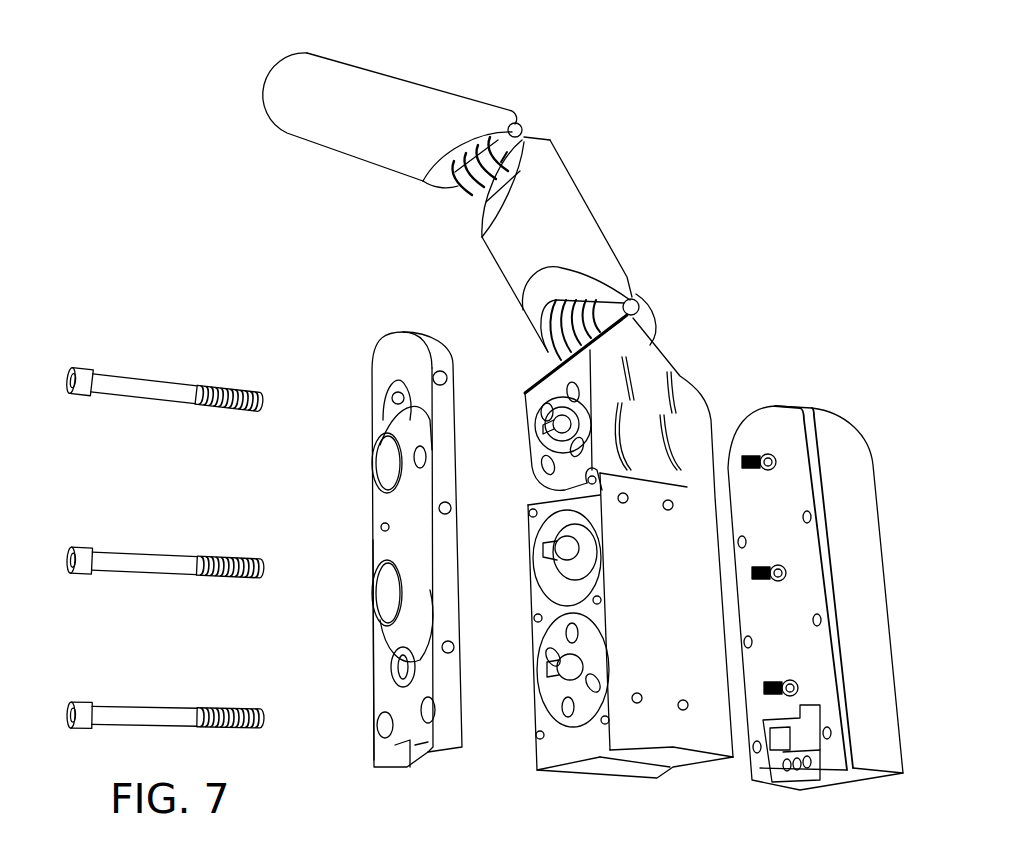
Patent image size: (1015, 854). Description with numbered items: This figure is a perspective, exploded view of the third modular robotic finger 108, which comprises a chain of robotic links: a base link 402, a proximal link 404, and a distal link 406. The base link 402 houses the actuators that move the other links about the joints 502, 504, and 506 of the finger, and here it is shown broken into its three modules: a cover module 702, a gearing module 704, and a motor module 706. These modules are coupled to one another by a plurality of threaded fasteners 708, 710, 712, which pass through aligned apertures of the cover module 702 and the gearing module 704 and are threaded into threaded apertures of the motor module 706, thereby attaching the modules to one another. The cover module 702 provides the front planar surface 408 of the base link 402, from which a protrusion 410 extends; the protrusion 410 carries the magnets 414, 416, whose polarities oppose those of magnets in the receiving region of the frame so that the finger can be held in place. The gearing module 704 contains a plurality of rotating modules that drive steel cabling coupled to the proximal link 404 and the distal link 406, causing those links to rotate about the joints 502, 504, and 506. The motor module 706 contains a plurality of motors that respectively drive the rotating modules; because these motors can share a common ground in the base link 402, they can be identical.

The third modular robotic finger 108 is at (641, 130).
The base link 402 is at (851, 595).
The proximal link 404 is at (558, 195).
The distal link 406 is at (422, 98).
The front planar surface 408 is at (367, 529).
The protrusion 410 is at (373, 540).
The magnet 414 is at (385, 472).
The magnet 416 is at (383, 593).
The joint 502 is at (717, 403).
The joint 504 is at (637, 292).
The joint 506 is at (524, 126).
The cover module 702 is at (390, 340).
The gearing module 704 is at (688, 382).
The motor module 706 is at (887, 578).
The threaded fastener 708 is at (175, 390).
The threaded fastener 710 is at (180, 562).
The threaded fastener 712 is at (177, 717).